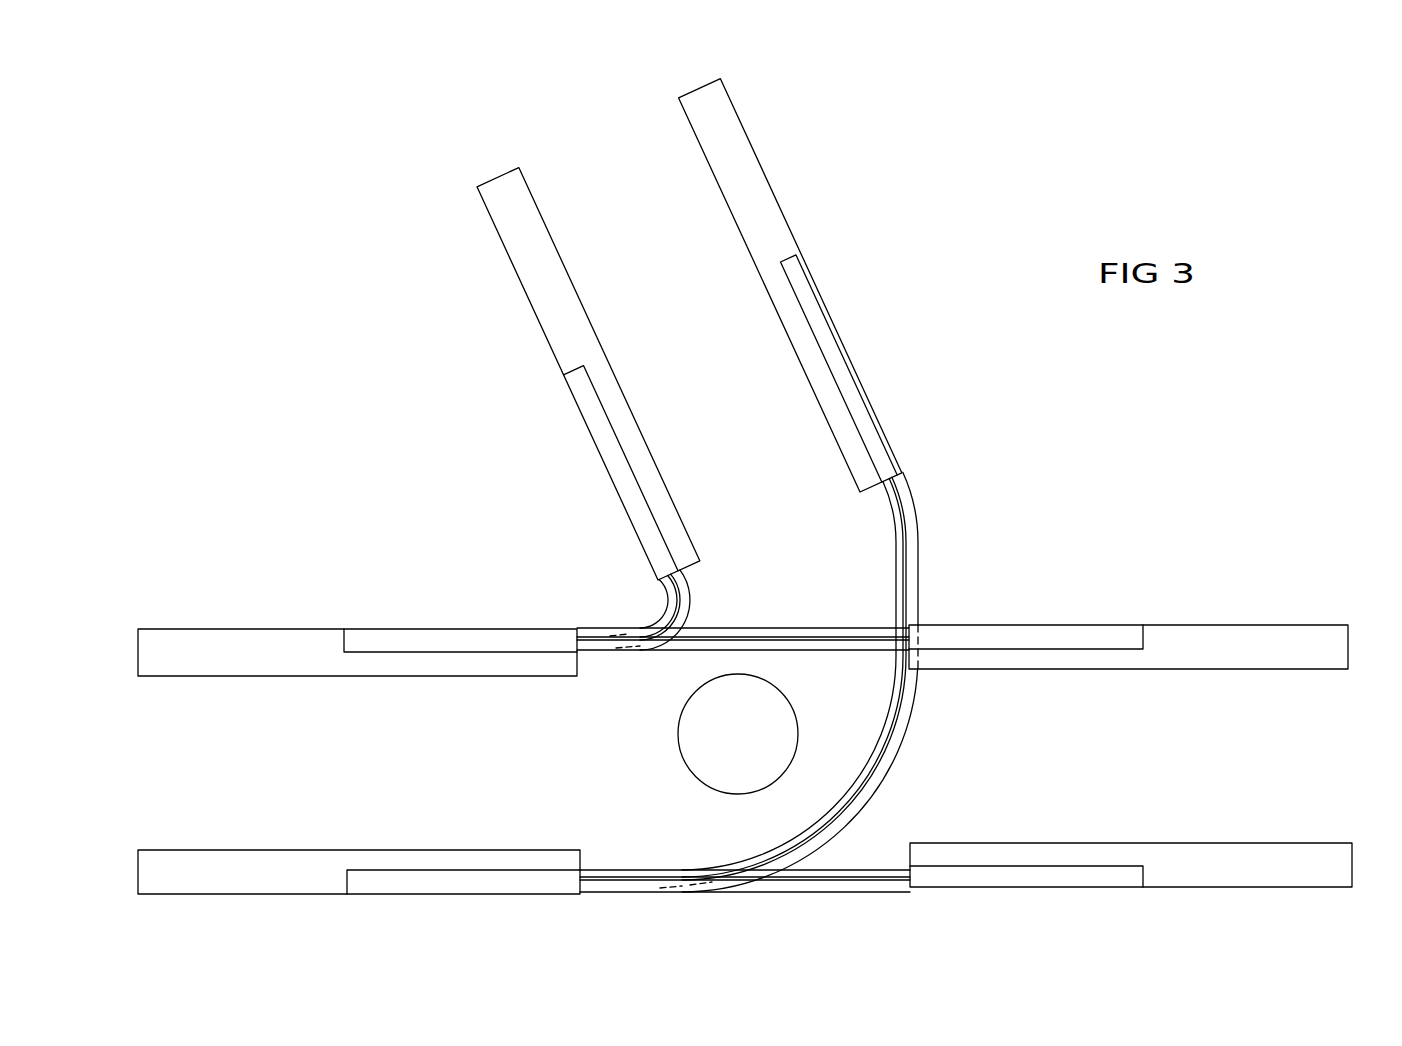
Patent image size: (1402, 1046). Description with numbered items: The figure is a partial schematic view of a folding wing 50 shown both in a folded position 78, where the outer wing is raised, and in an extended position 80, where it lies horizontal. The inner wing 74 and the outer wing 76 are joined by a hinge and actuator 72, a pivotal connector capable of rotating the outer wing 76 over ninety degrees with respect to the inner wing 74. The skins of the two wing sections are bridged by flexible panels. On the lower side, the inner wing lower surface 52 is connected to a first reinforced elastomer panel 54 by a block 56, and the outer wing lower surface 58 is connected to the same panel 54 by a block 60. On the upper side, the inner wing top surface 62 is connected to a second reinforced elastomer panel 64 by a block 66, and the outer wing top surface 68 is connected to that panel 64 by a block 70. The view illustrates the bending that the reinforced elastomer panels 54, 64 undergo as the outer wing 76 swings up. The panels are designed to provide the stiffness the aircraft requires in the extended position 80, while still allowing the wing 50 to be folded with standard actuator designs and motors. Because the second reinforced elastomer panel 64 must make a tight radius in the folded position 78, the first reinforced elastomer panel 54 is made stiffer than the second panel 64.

The folding wing 50 is at (468, 107).
The inner wing lower surface 52 is at (247, 858).
The first reinforced elastomer panel 54 is at (877, 867).
The block 56 is at (503, 878).
The outer wing lower surface 58 is at (783, 234).
The block 60 is at (857, 398).
The inner wing top surface 62 is at (283, 640).
The second reinforced elastomer panel 64 is at (633, 618).
The block 66 is at (447, 637).
The outer wing top surface 68 is at (525, 275).
The block 70 is at (607, 454).
The hinge and actuator 72 is at (678, 728).
The inner wing 74 is at (272, 538).
The outer wing 76 is at (922, 313).
The folded position 78 is at (646, 92).
The extended position 80 is at (1301, 552).